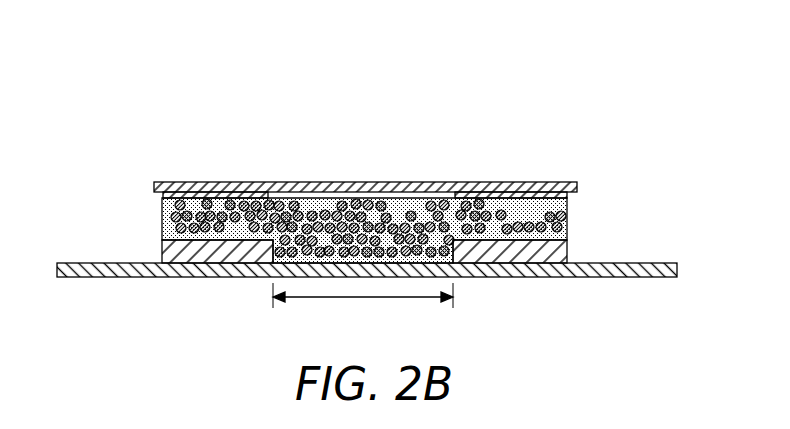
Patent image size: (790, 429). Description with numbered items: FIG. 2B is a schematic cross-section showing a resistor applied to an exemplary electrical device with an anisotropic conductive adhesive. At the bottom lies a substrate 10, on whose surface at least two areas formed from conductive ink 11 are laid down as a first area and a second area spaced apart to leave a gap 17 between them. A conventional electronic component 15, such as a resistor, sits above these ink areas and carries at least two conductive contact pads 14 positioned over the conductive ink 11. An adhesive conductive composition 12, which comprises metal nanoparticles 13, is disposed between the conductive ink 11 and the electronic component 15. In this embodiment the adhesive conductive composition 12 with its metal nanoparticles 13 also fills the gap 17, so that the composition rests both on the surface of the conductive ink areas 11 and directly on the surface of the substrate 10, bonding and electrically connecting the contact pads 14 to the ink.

The substrate 10 is at (76, 263).
The area formed from conductive ink 11 is at (162, 250).
The adhesive conductive composition 12 is at (567, 233).
The metal nanoparticles 13 is at (567, 214).
The conductive contact pad 14 is at (238, 182).
The conventional electronic component 15 is at (370, 182).
The gap 17 is at (358, 297).